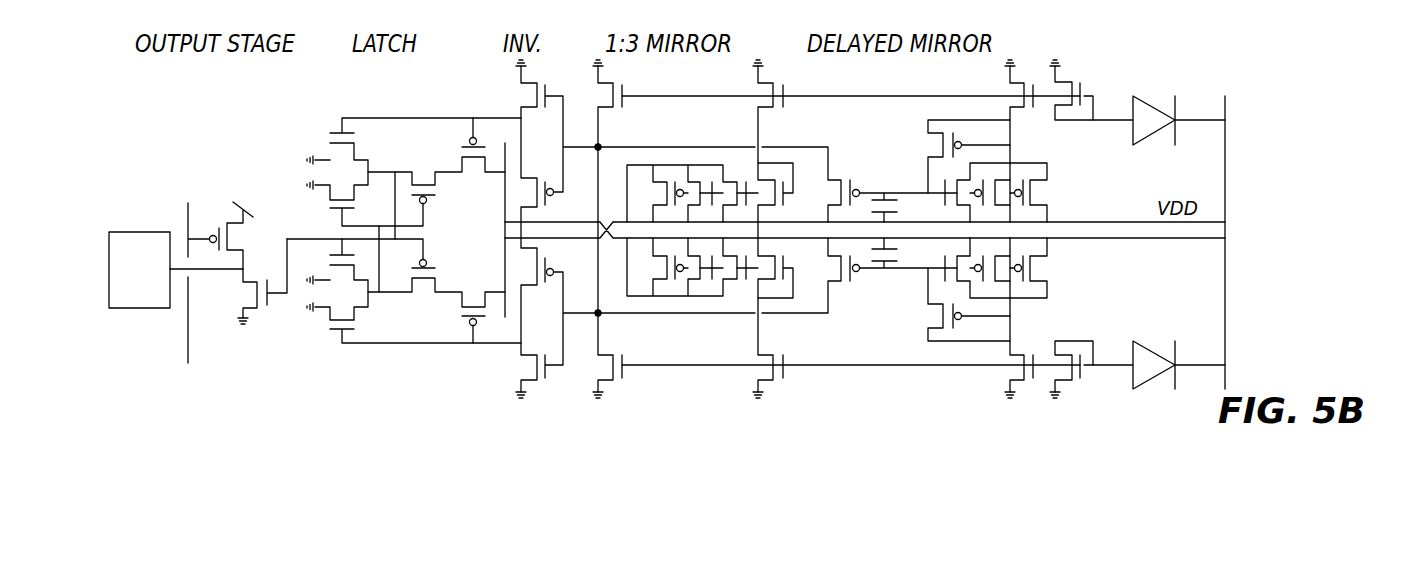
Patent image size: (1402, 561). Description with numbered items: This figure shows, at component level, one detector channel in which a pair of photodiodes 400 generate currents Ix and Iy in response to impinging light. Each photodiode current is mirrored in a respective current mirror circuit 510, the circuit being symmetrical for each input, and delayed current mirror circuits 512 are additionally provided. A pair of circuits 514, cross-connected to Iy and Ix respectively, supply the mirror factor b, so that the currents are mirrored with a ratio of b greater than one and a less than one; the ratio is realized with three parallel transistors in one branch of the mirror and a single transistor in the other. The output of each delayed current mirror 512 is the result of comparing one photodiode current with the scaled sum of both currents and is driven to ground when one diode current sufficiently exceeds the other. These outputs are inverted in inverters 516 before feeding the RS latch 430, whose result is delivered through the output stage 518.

The output stage 518 is at (278, 410).
The RS latch 430 is at (500, 418).
The inverters 516 is at (587, 418).
The pair of circuits providing the b mirror factor 514 is at (820, 418).
The delayed current mirror circuits 512 is at (1037, 413).
The current mirror circuits 510 is at (1117, 413).
The photodiodes 400 is at (1198, 413).